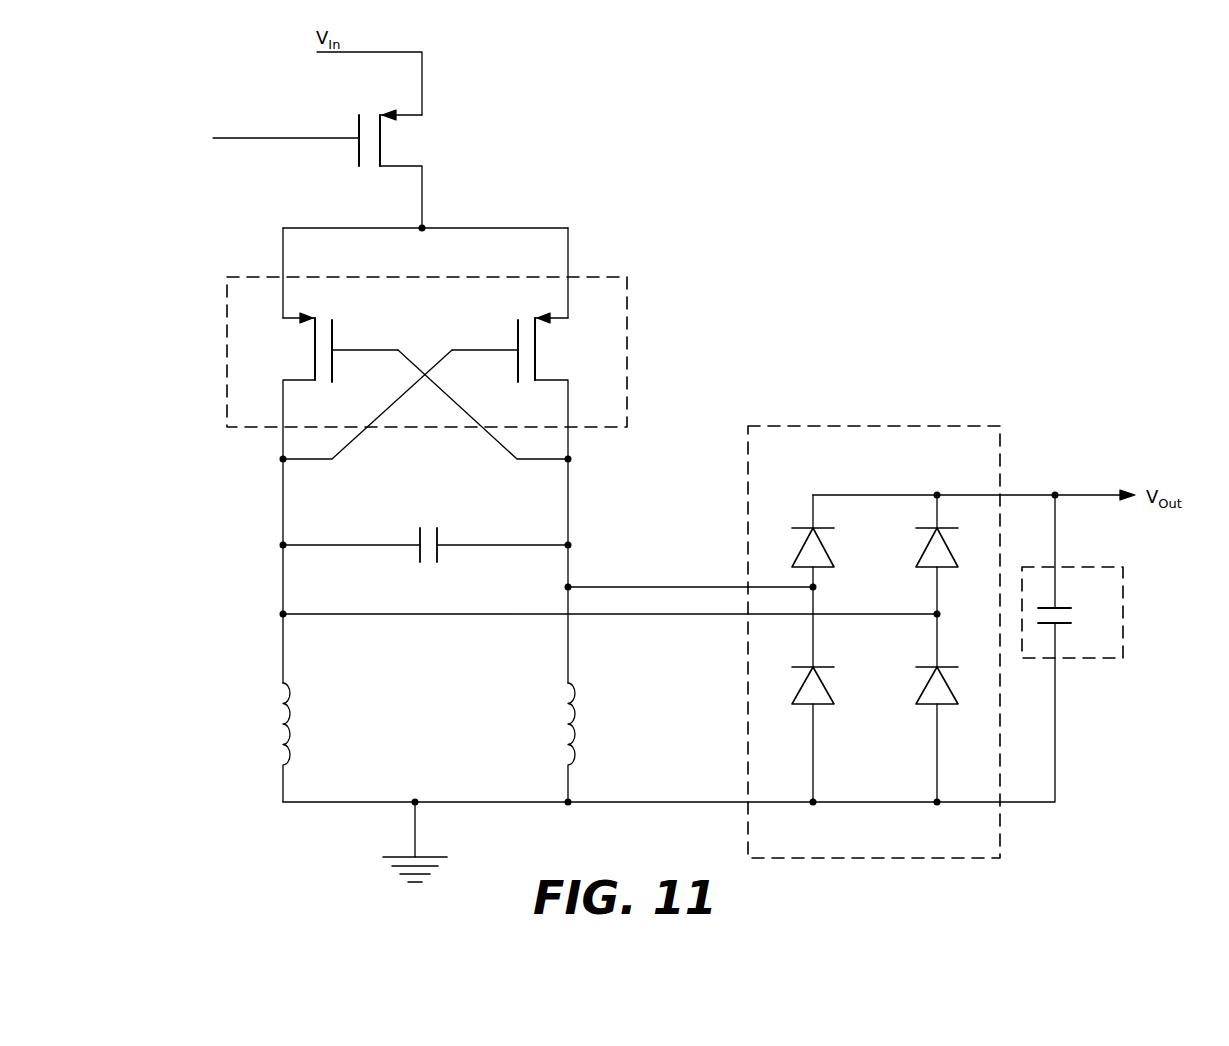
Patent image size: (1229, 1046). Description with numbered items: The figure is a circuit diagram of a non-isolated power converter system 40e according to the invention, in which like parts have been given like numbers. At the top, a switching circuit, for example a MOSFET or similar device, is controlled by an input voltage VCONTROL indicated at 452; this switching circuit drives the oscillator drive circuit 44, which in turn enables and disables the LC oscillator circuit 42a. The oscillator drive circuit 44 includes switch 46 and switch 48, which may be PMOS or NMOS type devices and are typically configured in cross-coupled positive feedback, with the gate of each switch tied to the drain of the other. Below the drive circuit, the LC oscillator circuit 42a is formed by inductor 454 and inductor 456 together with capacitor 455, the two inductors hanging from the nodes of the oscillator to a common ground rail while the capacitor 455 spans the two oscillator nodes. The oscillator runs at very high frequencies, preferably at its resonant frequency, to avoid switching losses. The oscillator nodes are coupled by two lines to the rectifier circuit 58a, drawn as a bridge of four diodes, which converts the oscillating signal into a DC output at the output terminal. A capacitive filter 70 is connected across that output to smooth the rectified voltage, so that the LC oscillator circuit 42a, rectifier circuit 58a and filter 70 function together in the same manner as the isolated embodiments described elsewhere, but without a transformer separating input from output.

The power converter system 40e is at (785, 183).
The rectifier circuit 58a is at (398, 141).
The input voltage 452 is at (172, 155).
The oscillator drive circuit 44 is at (386, 370).
The switch 46 is at (335, 336).
The switch 48 is at (516, 336).
The LC oscillator circuit 42a is at (569, 630).
The capacitor 455 is at (420, 555).
The inductor 454 is at (290, 693).
The inductor 456 is at (576, 693).
The capacitive filter 70 is at (1124, 607).